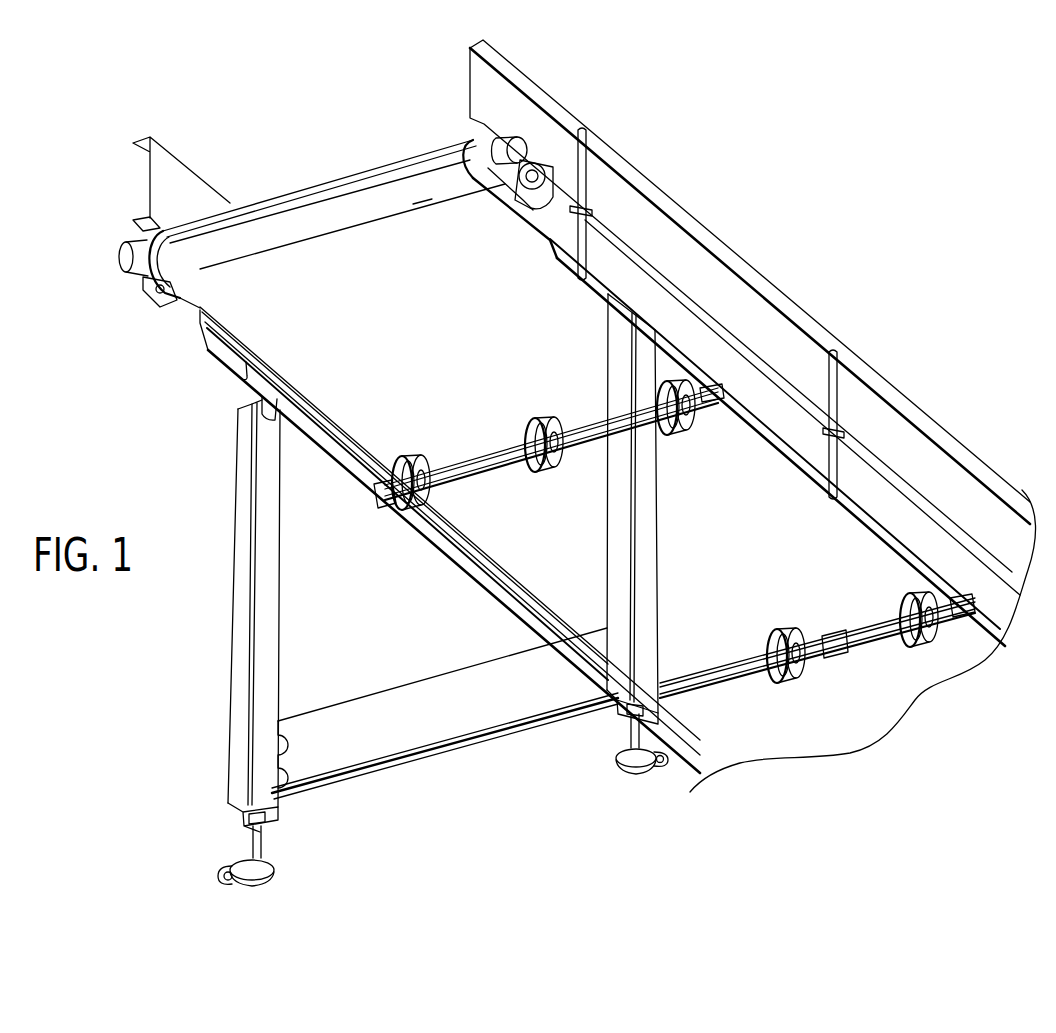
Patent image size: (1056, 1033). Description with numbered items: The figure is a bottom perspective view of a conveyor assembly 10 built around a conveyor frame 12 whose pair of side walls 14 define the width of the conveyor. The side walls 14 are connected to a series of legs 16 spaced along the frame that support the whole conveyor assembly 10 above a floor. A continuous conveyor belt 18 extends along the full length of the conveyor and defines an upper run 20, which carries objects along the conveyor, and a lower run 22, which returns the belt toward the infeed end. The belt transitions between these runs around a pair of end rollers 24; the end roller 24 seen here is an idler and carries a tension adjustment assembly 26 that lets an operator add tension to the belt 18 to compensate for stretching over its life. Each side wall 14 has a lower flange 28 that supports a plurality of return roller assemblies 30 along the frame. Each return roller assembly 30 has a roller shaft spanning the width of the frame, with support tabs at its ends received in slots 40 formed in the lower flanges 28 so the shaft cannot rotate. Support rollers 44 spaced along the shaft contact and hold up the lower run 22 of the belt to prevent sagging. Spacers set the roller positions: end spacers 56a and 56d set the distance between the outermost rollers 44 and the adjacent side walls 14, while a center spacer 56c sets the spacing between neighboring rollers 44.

The conveyor assembly 10 is at (700, 176).
The conveyor frame 12 is at (232, 395).
The side walls 14 is at (477, 86).
The legs 16 is at (278, 626).
The conveyor belt 18 is at (408, 152).
The upper run 20 is at (317, 179).
The lower run 22 is at (204, 306).
The end roller 24 is at (143, 248).
The tension adjustment assembly 26 is at (543, 162).
The lower flange 28 is at (559, 260).
The return roller assemblies 30 is at (479, 445).
The slot 40 is at (712, 396).
The support rollers 44 is at (404, 457).
The end spacer 56a is at (375, 505).
The center spacer 56c is at (833, 662).
The end spacer 56d is at (957, 628).